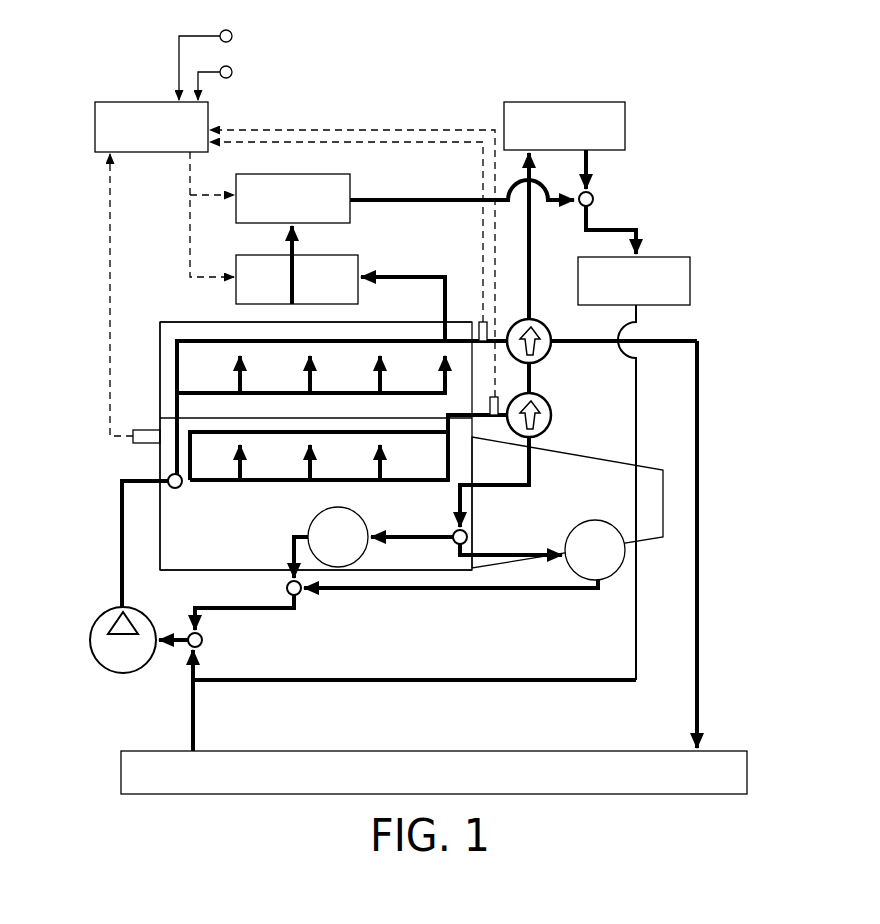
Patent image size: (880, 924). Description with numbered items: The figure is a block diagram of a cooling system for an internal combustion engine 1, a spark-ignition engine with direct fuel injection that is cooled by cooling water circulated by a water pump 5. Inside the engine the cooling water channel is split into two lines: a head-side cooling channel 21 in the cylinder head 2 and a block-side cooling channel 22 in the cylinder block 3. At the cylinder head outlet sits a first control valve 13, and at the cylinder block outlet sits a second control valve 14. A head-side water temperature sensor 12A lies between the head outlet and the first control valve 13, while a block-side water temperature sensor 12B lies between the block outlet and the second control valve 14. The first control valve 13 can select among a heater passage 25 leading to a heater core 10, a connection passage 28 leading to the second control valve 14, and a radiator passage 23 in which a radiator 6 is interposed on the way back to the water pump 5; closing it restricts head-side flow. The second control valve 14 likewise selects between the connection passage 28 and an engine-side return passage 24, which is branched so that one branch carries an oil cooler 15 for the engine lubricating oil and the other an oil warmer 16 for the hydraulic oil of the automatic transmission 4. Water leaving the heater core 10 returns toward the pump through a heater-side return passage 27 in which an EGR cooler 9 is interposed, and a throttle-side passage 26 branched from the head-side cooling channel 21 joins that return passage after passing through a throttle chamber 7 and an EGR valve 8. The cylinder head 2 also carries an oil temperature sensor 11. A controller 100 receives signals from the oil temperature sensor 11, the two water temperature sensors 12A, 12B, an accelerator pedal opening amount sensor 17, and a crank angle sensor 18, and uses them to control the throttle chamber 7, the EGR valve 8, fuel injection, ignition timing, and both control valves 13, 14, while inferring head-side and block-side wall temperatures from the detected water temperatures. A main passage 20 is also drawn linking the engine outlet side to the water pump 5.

The internal combustion engine 1 is at (156, 284).
The cylinder head 2 is at (160, 350).
The cylinder block 3 is at (160, 465).
The automatic transmission 4 is at (582, 466).
The water pump 5 is at (96, 622).
The radiator 6 is at (121, 776).
The throttle chamber 7 is at (346, 256).
The EGR valve 8 is at (352, 188).
The EGR cooler 9 is at (678, 257).
The heater core 10 is at (580, 102).
The oil temperature sensor 11 is at (145, 430).
The head-side water temperature sensor 12A is at (481, 321).
The block-side water temperature sensor 12B is at (500, 402).
The first control valve 13 is at (551, 336).
The second control valve 14 is at (551, 417).
The oil cooler 15 is at (358, 514).
The oil warmer 16 is at (608, 582).
The accelerator pedal opening amount sensor 17 is at (232, 72).
The crank angle sensor 18 is at (231, 31).
The main coolant passage 20 is at (120, 528).
The head-side cooling channel 21 is at (206, 341).
The block-side cooling channel 22 is at (194, 486).
The radiator passage 23 is at (699, 418).
The engine-side return passage 24 is at (498, 486).
The heater passage 25 is at (531, 243).
The throttle-side passage 26 is at (400, 276).
The heater-side return passage 27 is at (612, 230).
The connection passage 28 is at (532, 386).
The controller 100 is at (128, 102).